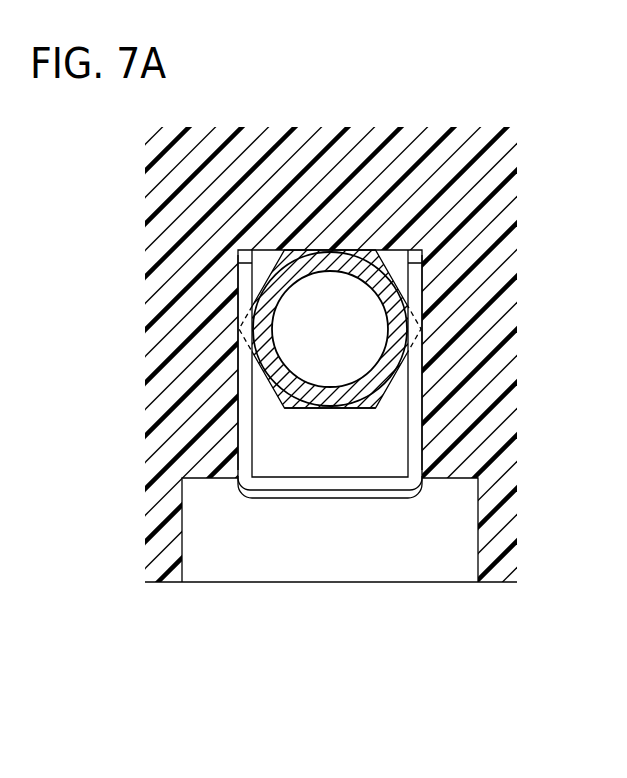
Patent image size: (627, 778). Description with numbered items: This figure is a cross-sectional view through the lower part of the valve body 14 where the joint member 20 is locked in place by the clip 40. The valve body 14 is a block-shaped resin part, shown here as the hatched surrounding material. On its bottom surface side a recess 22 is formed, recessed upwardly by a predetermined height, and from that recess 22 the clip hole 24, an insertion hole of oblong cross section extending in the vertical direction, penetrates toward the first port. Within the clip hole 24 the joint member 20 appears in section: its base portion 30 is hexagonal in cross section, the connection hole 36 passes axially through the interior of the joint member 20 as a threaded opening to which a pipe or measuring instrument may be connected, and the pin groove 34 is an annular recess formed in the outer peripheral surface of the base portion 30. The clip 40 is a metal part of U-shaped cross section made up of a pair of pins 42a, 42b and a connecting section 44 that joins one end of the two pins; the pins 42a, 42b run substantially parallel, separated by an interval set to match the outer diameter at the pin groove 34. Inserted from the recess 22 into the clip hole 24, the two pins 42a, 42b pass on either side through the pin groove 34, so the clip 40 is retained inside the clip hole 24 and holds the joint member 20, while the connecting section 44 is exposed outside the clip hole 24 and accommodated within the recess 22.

The valve body 14 is at (150, 207).
The joint member 20 is at (327, 434).
The recess 22 is at (210, 533).
The clip hole 24 is at (268, 420).
The base portion 30 is at (375, 409).
The pin groove 34 is at (286, 250).
The connection hole 36 is at (266, 293).
The clip 40 is at (383, 505).
The pin 42a is at (425, 388).
The pin 42b is at (245, 443).
The connecting section 44 is at (338, 488).